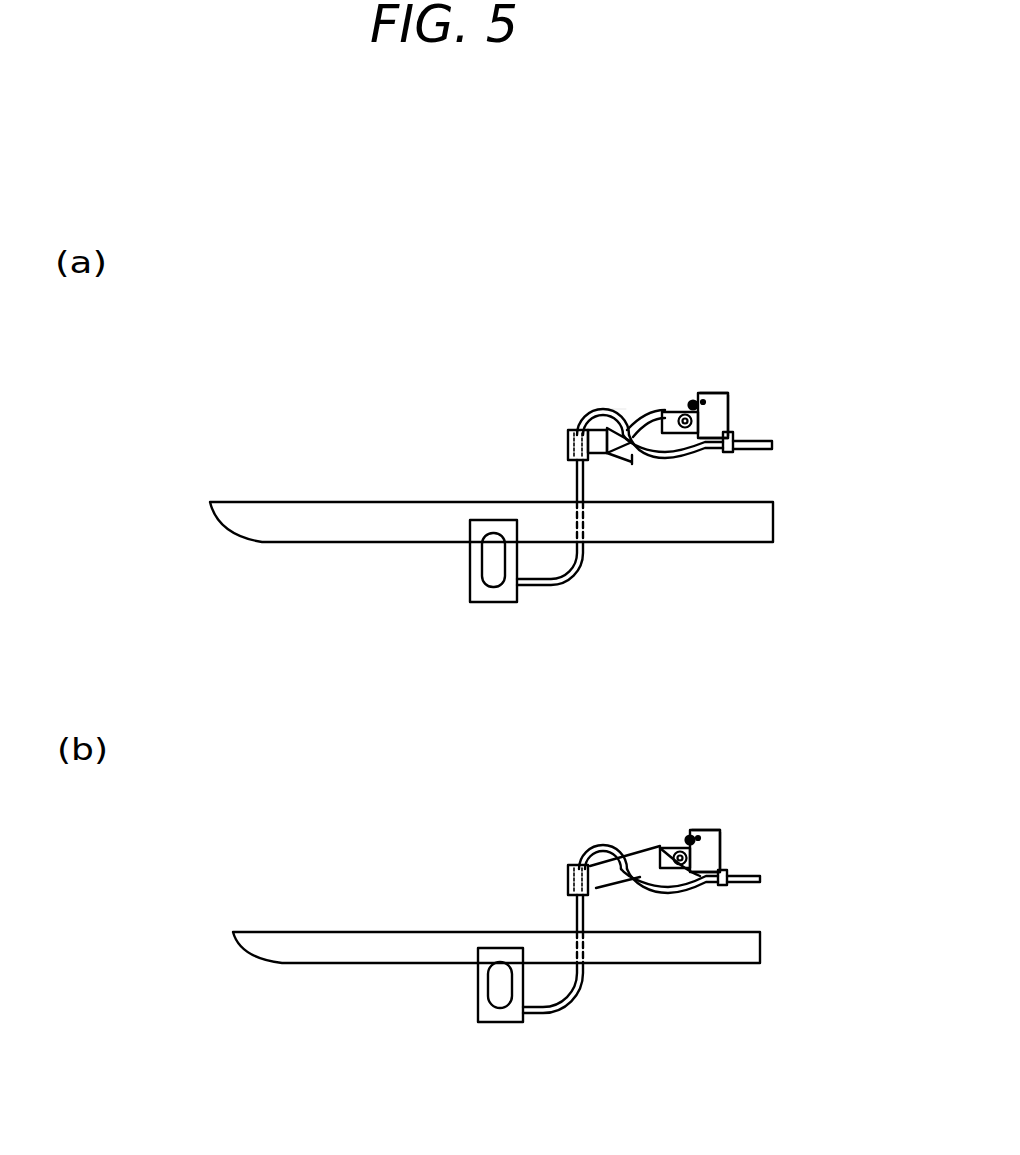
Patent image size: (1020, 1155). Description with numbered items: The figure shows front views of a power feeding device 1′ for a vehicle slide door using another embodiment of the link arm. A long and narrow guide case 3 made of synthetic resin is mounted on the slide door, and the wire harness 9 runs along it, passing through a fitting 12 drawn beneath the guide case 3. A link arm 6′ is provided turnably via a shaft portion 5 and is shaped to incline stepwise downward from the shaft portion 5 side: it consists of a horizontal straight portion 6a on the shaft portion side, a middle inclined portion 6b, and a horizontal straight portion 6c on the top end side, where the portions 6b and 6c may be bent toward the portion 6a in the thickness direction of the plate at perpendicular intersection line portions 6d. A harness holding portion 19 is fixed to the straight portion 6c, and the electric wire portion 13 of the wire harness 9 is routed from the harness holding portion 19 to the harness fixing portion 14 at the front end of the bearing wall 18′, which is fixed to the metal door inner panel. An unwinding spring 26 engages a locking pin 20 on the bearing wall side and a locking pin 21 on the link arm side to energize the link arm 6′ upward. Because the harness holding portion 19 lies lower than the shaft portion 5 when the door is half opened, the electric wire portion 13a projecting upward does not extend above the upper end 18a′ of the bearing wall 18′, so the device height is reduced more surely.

The power feeding device 1′ is at (262, 347).
The guide case 3 is at (363, 502).
The shaft portion 5 is at (697, 407).
The horizontal straight portion on the shaft portion side 6a is at (663, 412).
The middle inclined portion 6b is at (625, 427).
The horizontal straight portion on the top end side 6c is at (583, 408).
The perpendicular intersection line portions 6d is at (628, 448).
The link arm 6′ is at (641, 448).
The wire harness 9 is at (592, 559).
The fitting 12 is at (490, 602).
The electric wire portion 13 is at (773, 445).
The electric wire portion 13a is at (583, 407).
The harness fixing portion 14 is at (733, 452).
The upper end of the bearing wall 18a′ is at (717, 394).
The bearing wall 18′ is at (728, 404).
The harness holding portion 19 is at (568, 445).
The locking pin 20 is at (692, 416).
The locking pin 21 is at (680, 405).
The unwinding spring 26 is at (730, 423).